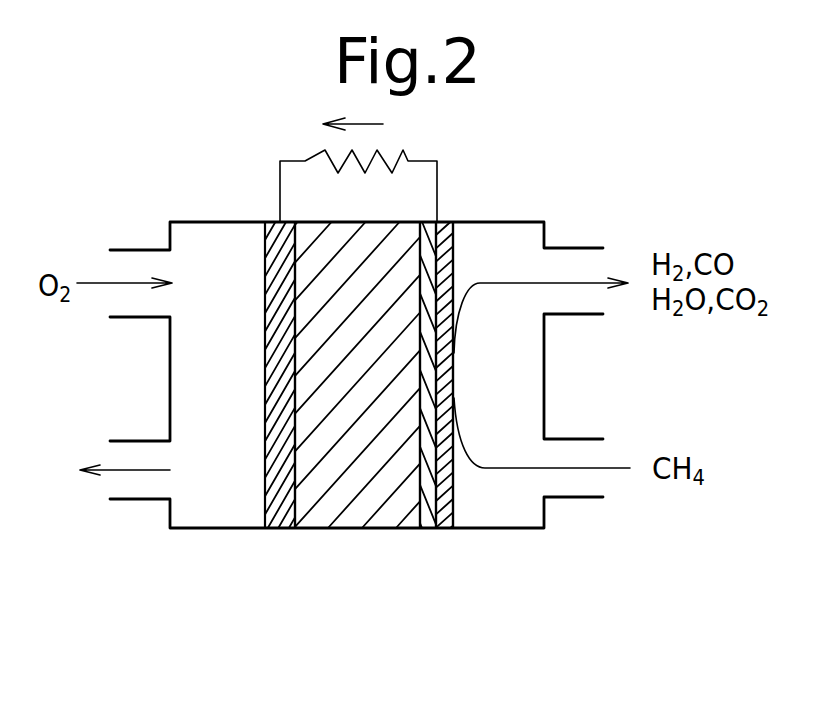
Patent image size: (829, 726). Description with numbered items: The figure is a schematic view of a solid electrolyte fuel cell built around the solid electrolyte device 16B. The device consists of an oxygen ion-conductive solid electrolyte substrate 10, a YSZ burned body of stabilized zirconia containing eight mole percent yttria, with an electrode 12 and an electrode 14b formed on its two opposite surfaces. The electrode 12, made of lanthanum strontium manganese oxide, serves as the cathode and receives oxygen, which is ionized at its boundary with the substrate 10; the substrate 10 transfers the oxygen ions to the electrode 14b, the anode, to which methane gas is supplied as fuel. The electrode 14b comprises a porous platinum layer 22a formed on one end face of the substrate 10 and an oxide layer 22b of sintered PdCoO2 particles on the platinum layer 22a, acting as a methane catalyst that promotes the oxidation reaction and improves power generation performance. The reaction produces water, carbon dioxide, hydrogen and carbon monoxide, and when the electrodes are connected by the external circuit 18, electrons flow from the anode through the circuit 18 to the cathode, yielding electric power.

The solid electrolyte substrate 10 is at (357, 513).
The electrode 12 is at (280, 537).
The electrode 14b is at (437, 538).
The solid electrolyte device 16B is at (482, 580).
The external circuit 18 is at (437, 182).
The porous platinum layer 22a is at (425, 222).
The oxide layer 22b is at (455, 250).